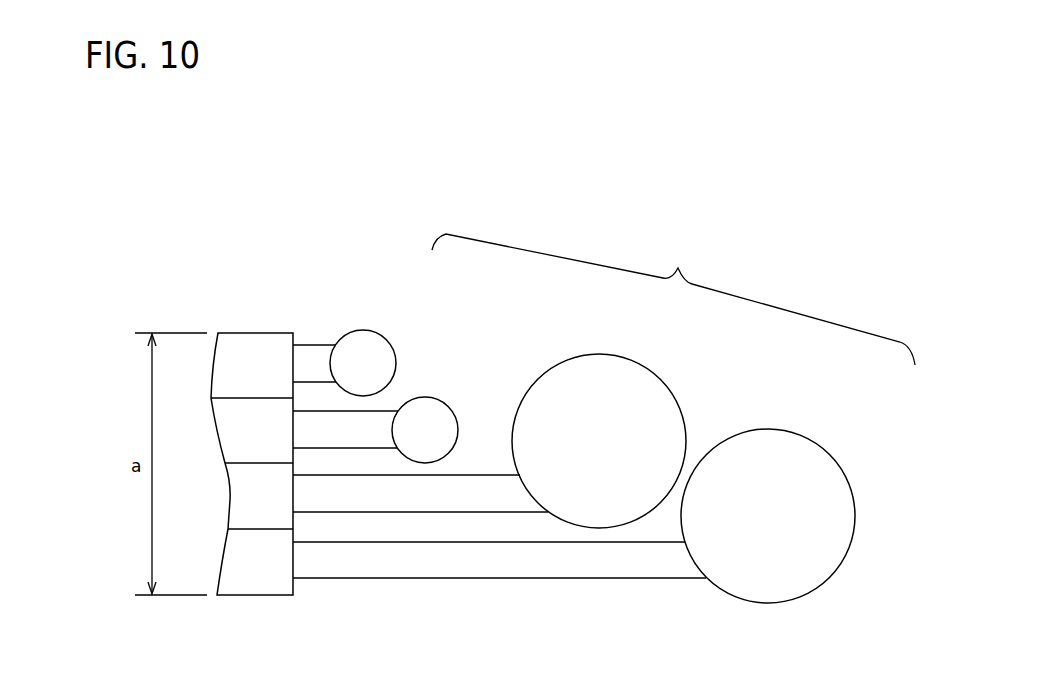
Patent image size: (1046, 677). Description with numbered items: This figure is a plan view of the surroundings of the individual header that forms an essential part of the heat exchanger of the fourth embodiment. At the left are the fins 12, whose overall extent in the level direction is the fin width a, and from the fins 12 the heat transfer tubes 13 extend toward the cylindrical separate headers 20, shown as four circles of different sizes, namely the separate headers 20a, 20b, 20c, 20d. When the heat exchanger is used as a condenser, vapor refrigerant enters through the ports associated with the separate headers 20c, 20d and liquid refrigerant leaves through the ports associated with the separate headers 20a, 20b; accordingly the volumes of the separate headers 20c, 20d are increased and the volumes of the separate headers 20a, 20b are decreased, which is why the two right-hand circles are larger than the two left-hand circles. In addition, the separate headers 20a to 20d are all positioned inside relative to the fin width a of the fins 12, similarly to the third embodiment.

The fins 12 is at (253, 333).
The heat transfer tubes 13 is at (318, 344).
The separate headers 20 is at (678, 268).
The separate header 20a is at (382, 334).
The separate header 20b is at (439, 399).
The separate header 20c is at (661, 379).
The separate header 20d is at (823, 449).